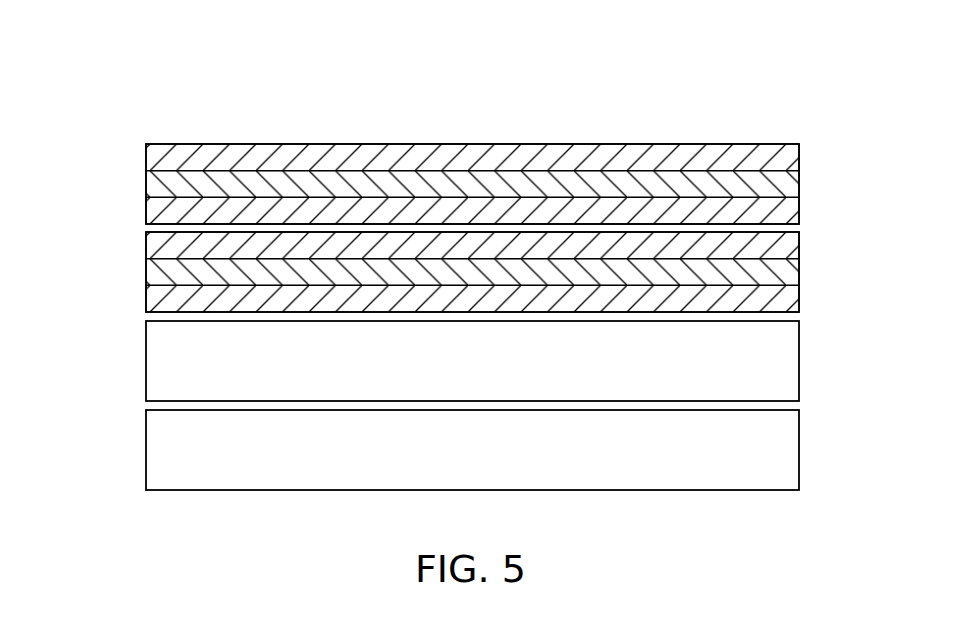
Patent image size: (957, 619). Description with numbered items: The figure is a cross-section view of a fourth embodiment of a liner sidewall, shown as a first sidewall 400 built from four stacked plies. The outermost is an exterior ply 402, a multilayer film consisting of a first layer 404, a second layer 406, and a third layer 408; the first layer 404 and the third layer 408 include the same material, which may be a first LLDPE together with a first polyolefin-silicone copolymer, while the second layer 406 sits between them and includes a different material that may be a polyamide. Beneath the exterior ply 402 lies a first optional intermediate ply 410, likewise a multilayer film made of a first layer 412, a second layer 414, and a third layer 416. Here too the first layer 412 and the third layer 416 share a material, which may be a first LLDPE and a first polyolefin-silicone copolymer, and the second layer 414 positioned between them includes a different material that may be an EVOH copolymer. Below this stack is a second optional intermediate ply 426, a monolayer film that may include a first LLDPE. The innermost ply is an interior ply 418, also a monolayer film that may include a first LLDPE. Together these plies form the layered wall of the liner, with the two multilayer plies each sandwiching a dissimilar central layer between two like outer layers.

The first sidewall 400 is at (533, 100).
The exterior ply 402 is at (131, 144).
The first layer 404 is at (788, 159).
The second layer 406 is at (788, 186).
The third layer 408 is at (788, 213).
The first optional intermediate ply 410 is at (131, 232).
The first layer 412 is at (788, 248).
The second layer 414 is at (788, 275).
The third layer 416 is at (788, 302).
The second optional intermediate ply 426 is at (131, 321).
The interior ply 418 is at (131, 410).